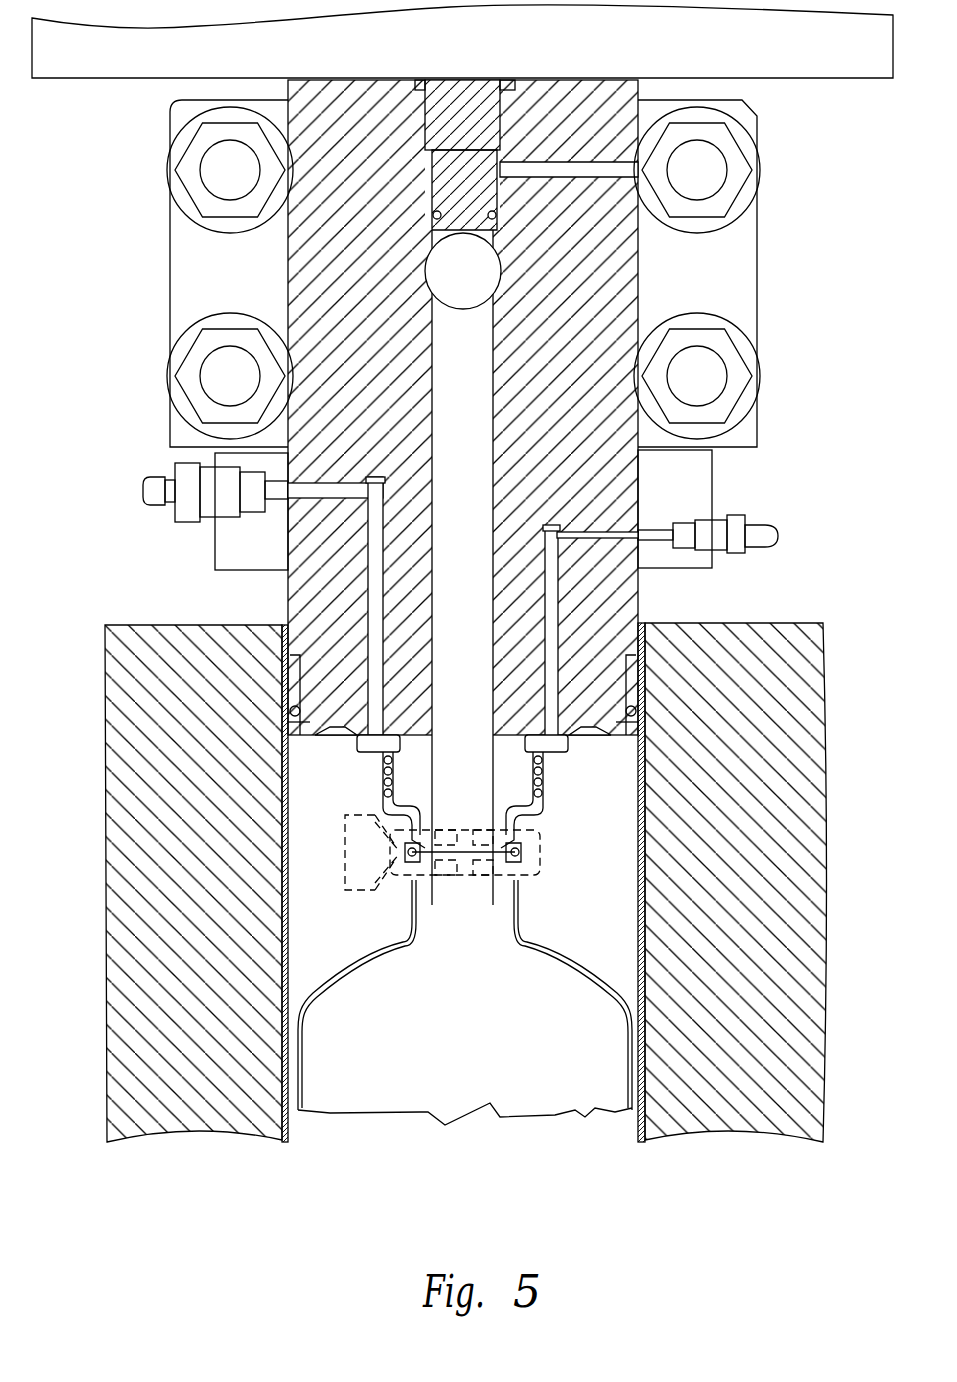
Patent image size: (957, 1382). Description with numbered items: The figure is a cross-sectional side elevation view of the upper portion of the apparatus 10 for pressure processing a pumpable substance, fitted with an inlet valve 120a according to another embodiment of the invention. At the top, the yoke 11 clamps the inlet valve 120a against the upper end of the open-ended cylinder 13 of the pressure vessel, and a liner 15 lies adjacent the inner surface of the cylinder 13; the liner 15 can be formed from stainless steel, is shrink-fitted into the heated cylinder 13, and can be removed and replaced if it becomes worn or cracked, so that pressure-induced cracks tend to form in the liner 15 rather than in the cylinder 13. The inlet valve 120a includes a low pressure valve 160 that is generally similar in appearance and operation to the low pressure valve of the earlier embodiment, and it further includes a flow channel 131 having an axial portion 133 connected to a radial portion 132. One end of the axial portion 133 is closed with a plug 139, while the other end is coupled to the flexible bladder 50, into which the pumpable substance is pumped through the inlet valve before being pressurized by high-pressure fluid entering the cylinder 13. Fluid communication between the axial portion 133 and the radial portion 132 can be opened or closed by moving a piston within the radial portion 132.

The apparatus 10 is at (124, 178).
The yoke 11 is at (290, 64).
The open-ended cylinder 13 is at (740, 707).
The liner 15 is at (643, 790).
The flexible bladder 50 is at (567, 968).
The inlet valve 120a is at (170, 273).
The flow channel 131 is at (518, 430).
The radial portion 132 is at (477, 270).
The axial portion 133 is at (482, 456).
The plug 139 is at (465, 78).
The low pressure valve 160 is at (258, 580).